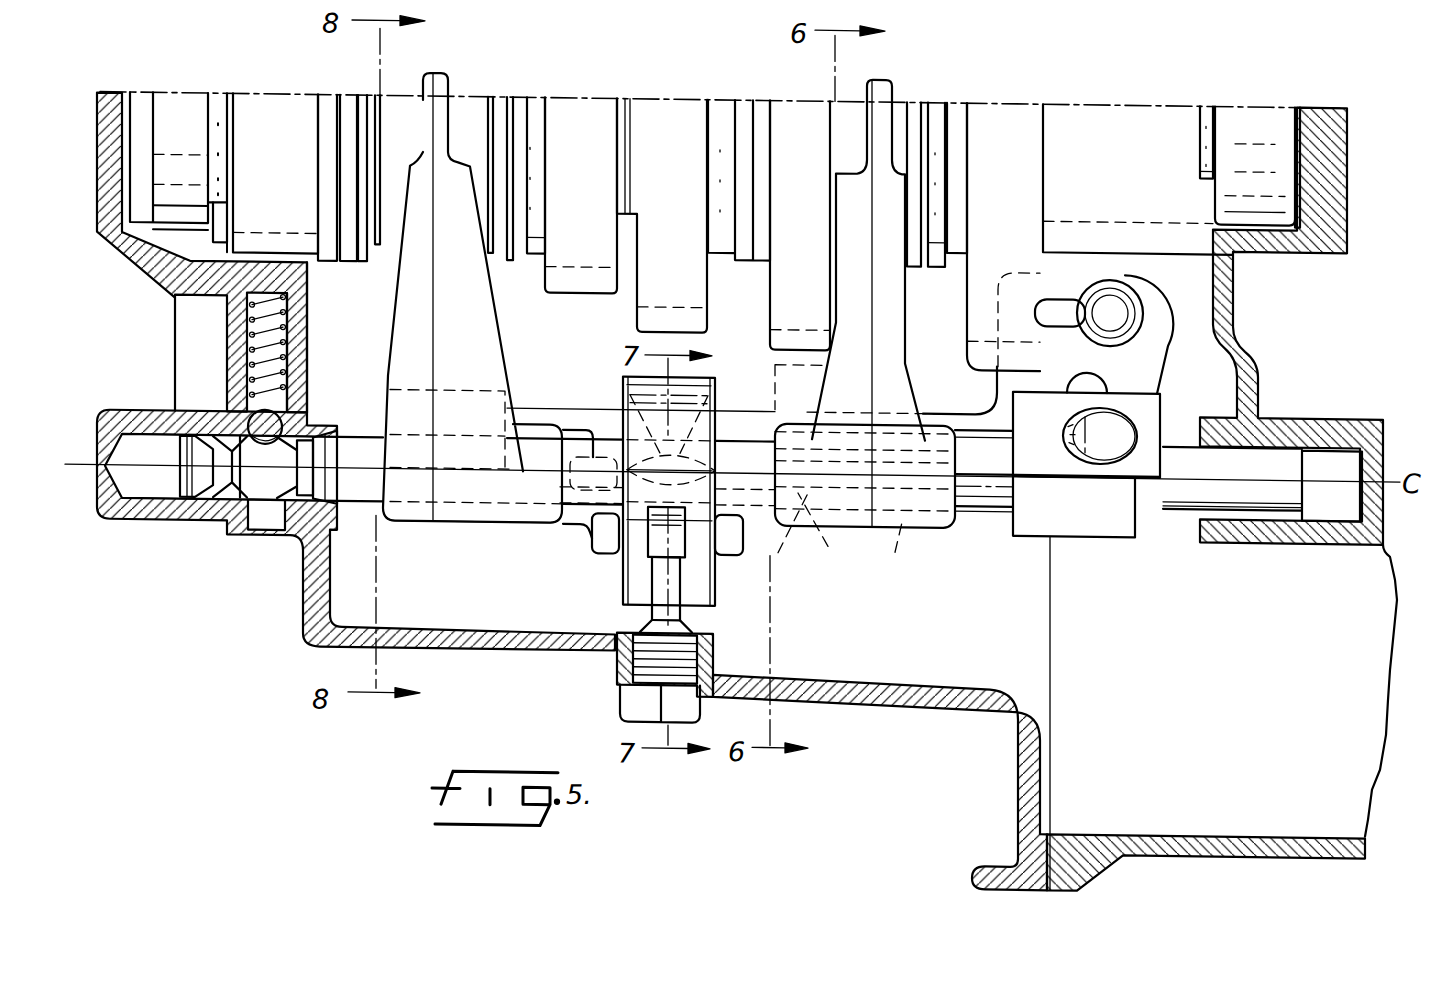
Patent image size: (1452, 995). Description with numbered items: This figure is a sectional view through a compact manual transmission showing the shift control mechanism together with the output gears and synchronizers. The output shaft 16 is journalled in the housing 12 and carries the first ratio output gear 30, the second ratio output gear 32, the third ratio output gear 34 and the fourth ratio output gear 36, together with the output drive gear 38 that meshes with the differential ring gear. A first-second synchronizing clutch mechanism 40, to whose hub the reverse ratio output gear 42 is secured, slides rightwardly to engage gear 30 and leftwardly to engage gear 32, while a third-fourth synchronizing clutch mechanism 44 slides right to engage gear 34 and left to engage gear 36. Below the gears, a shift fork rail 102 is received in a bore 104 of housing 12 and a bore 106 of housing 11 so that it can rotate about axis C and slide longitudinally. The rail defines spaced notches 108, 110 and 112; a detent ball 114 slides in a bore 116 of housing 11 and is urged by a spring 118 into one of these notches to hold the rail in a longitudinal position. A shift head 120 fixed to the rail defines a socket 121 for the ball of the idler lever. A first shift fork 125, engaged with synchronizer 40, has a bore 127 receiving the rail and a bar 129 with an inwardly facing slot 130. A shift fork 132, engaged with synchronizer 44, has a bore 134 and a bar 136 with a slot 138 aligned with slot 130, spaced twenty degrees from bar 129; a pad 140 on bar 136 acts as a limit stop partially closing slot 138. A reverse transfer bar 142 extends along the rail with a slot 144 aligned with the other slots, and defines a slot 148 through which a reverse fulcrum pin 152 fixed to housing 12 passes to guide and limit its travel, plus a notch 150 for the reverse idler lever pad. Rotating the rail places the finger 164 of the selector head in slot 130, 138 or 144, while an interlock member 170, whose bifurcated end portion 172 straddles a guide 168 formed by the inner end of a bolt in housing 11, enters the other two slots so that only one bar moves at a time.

The housing 11 is at (310, 603).
The housing 12 is at (1262, 852).
The output shaft 16 is at (1218, 110).
The first ratio output gear 30 is at (962, 299).
The second ratio output gear 32 is at (630, 309).
The third ratio output gear 34 is at (555, 307).
The fourth ratio output gear 36 is at (308, 259).
The output drive gear 38 is at (1150, 92).
The first-second synchronizing clutch mechanism 40 is at (898, 106).
The reverse ratio output gear 42 is at (782, 292).
The third-fourth synchronizing clutch mechanism 44 is at (447, 106).
The shift fork rail 102 is at (995, 503).
The bore 104 is at (1333, 513).
The bore 106 is at (153, 447).
The notch 108 is at (327, 506).
The notch 110 is at (273, 502).
The notch 112 is at (208, 513).
The detent ball 114 is at (290, 426).
The bore 116 is at (293, 383).
The spring 118 is at (253, 331).
The shift head 120 is at (1122, 529).
The socket 121 is at (1118, 436).
The first shift fork 125 is at (780, 410).
The bore 127 is at (923, 545).
The bar 129 is at (843, 531).
The slot 130 is at (590, 536).
The shift fork 132 is at (425, 522).
The bore 134 is at (493, 515).
The bar 136 is at (540, 540).
The slot 138 is at (806, 531).
The pad 140 is at (610, 554).
The reverse transfer bar 142 is at (963, 387).
The slot 144 is at (716, 420).
The slot 148 is at (1065, 332).
The notch 150 is at (1098, 380).
The reverse fulcrum pin 152 is at (1130, 308).
The finger 164 is at (623, 392).
The guide 168 is at (617, 663).
The interlock member 170 is at (718, 378).
The bifurcated end portion 172 is at (623, 613).